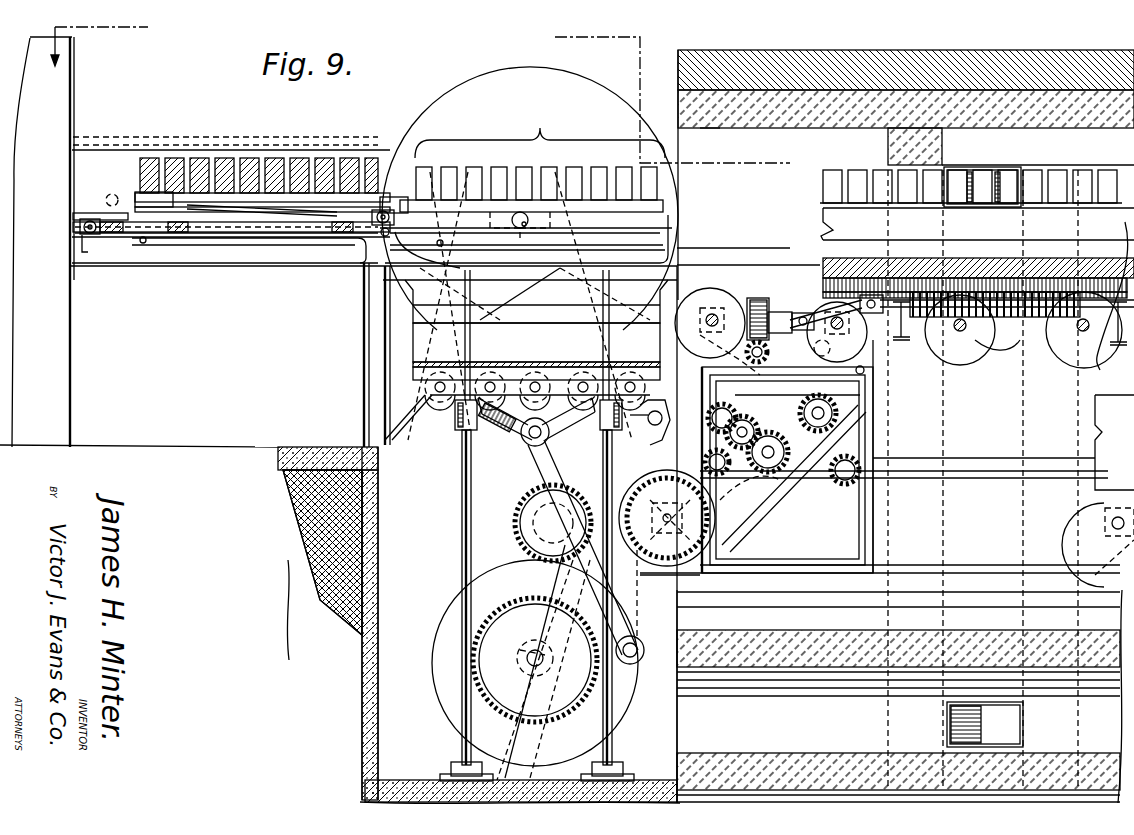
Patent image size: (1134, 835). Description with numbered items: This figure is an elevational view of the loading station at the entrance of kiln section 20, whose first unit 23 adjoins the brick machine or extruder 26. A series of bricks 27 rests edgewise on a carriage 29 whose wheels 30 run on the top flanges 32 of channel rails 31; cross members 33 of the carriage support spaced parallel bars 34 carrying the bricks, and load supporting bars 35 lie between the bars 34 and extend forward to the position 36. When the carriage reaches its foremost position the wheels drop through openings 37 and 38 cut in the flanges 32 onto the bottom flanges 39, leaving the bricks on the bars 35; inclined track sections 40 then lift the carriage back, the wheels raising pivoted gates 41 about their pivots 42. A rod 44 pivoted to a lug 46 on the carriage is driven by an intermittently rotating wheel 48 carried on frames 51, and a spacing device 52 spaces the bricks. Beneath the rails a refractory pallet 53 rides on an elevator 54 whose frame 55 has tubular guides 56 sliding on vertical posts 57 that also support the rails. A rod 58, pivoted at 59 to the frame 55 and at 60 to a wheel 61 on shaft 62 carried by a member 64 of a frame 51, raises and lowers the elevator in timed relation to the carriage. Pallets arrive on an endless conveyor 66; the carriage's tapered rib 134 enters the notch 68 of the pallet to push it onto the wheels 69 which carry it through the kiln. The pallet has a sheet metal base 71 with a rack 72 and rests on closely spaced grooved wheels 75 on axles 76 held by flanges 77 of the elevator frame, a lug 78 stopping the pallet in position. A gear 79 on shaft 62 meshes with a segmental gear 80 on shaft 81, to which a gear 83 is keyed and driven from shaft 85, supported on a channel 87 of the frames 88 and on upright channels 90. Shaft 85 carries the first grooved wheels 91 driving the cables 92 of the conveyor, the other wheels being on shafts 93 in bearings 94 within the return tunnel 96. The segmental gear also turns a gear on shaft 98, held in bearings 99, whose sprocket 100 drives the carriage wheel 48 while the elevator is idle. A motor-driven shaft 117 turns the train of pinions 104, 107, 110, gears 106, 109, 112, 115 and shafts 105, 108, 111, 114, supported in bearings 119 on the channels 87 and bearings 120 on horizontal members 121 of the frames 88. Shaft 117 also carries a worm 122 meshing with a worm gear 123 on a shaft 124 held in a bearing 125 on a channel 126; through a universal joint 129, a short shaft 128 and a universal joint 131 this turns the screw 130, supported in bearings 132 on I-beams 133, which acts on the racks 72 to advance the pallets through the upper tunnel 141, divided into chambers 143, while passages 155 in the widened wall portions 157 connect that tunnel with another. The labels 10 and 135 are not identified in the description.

The machine frame 10 is at (583, 198).
The kiln section 20 is at (722, 52).
The unit 23 is at (678, 52).
The brick machine or extruder 26 is at (74, 62).
The bricks 27 is at (205, 160).
The carriage 29 is at (265, 195).
The wheels 30 is at (90, 236).
The rails 31 is at (72, 222).
The top flanges 32 is at (243, 246).
The cross members 33 is at (183, 233).
The bars 34 is at (145, 196).
The load supporting bars 35 is at (665, 204).
The position 36 is at (540, 129).
The cut-away opening 37 is at (362, 250).
The cut-away opening 38 is at (690, 250).
The bottom flanges 39 is at (300, 263).
The inclined track sections 40 is at (122, 248).
The gates 41 is at (135, 248).
The pivot 42 is at (145, 244).
The rod 44 is at (285, 216).
The lug 46 is at (110, 195).
The wheel 48 is at (468, 88).
The frames 51 is at (390, 380).
The spacing device 52 is at (125, 148).
The refractory pallet 53 is at (830, 208).
The elevator 54 is at (512, 380).
The frame 55 is at (515, 425).
The tubular guides 56 is at (455, 426).
The vertical posts 57 is at (460, 472).
The rod 58 is at (560, 482).
The pivotal connection 59 is at (533, 440).
The pivotal connection 60 is at (644, 651).
The wheel 61 is at (633, 700).
The shaft 62 is at (530, 662).
The member 64 is at (535, 745).
The endless conveyor 66 is at (916, 470).
The notch 68 is at (390, 307).
The wheels 69 is at (720, 290).
The sheet metal base 71 is at (980, 280).
The rack 72 is at (1005, 280).
The grooved wheels 75 is at (455, 378).
The axles 76 is at (585, 378).
The flanges 77 is at (555, 376).
The lug 78 is at (390, 364).
The gear 79 is at (503, 606).
The segmental gear 80 is at (532, 538).
The shaft 81 is at (574, 608).
The gear 83 is at (543, 530).
The shaft 85 is at (715, 520).
The channel 87 is at (845, 417).
The frames 88 is at (865, 400).
The upright channels 90 is at (700, 596).
The grooved wheels 91 is at (1080, 535).
The cables 92 is at (940, 476).
The shafts 93 is at (1110, 522).
The bearings 94 is at (1090, 548).
The tunnel 96 is at (1020, 598).
The shaft 98 is at (655, 417).
The bearings 99 is at (634, 414).
The sprocket 100 is at (722, 398).
The pinion 104 is at (718, 459).
The shaft 105 is at (770, 505).
The gear 106 is at (747, 428).
The pinion 107 is at (752, 426).
The shaft 108 is at (780, 465).
The gear 109 is at (805, 404).
The pinion 110 is at (826, 395).
The shaft 111 is at (825, 470).
The gear 112 is at (873, 385).
The shaft 114 is at (828, 348).
The gear 115 is at (873, 360).
The shaft 117 is at (765, 395).
The bearings 119 is at (812, 416).
The bearings 120 is at (855, 370).
The horizontal members 121 is at (729, 412).
The worm 122 is at (710, 323).
The worm gear 123 is at (757, 297).
The shaft 124 is at (760, 298).
The bearing 125 is at (785, 310).
The channel 126 is at (767, 350).
The short shaft 128 is at (852, 257).
The universal joint 129 is at (803, 312).
The screw 130 is at (950, 265).
The universal joint 131 is at (880, 270).
The bearings 132 is at (910, 262).
The I-beams 133 is at (897, 340).
The tapered rib 134 is at (686, 270).
The link 135 is at (966, 335).
The tunnel 141 is at (758, 135).
The chambers 143 is at (990, 140).
The passages 155 is at (988, 168).
The widened wall portion 157 is at (888, 724).